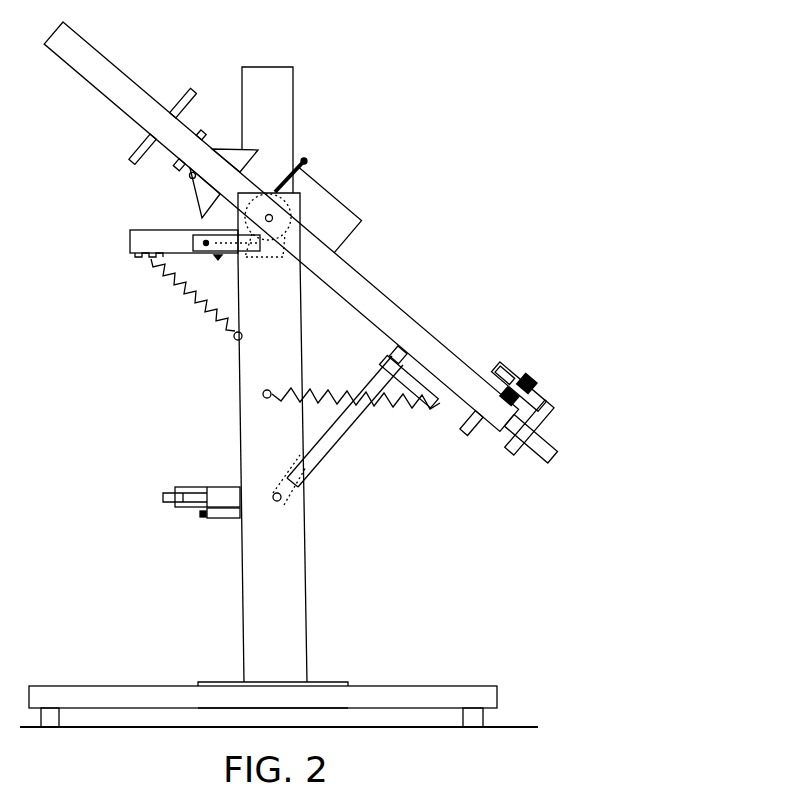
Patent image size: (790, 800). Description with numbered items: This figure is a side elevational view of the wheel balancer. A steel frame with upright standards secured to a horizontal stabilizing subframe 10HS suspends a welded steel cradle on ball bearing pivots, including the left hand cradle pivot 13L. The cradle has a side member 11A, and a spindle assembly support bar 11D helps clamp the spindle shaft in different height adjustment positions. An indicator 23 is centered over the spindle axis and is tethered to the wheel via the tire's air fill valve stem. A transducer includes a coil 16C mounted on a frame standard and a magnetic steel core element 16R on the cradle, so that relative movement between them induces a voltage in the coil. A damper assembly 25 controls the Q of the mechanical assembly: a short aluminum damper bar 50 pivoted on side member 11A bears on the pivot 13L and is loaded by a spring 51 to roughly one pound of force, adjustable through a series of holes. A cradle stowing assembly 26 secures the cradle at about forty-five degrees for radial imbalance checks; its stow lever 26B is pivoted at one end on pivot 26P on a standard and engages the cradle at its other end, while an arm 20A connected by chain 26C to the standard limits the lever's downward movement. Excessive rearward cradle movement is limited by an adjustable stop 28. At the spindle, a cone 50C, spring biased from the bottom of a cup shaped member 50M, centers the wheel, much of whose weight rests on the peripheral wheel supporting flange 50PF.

The horizontal stabilizing subframe 10HS is at (413, 695).
The side member 11A is at (72, 72).
The spindle assembly support bar 11D is at (555, 415).
The left hand cradle pivot 13L is at (272, 218).
The coil 16C is at (225, 490).
The magnetic steel core element 16R is at (468, 436).
The arm 20A is at (412, 372).
The indicator 23 is at (177, 97).
The damper assembly 25 is at (153, 288).
The cradle stowing assembly 26 is at (354, 468).
The stow lever 26B is at (327, 460).
The chain 26C is at (323, 390).
The pivot 26P is at (281, 505).
The adjustable stop 28 is at (193, 527).
The damper bar 50 is at (133, 230).
The cone 50C is at (243, 157).
The cup shaped member 50M is at (337, 206).
The peripheral wheel supporting flange 50PF is at (310, 161).
The spring 51 is at (210, 308).